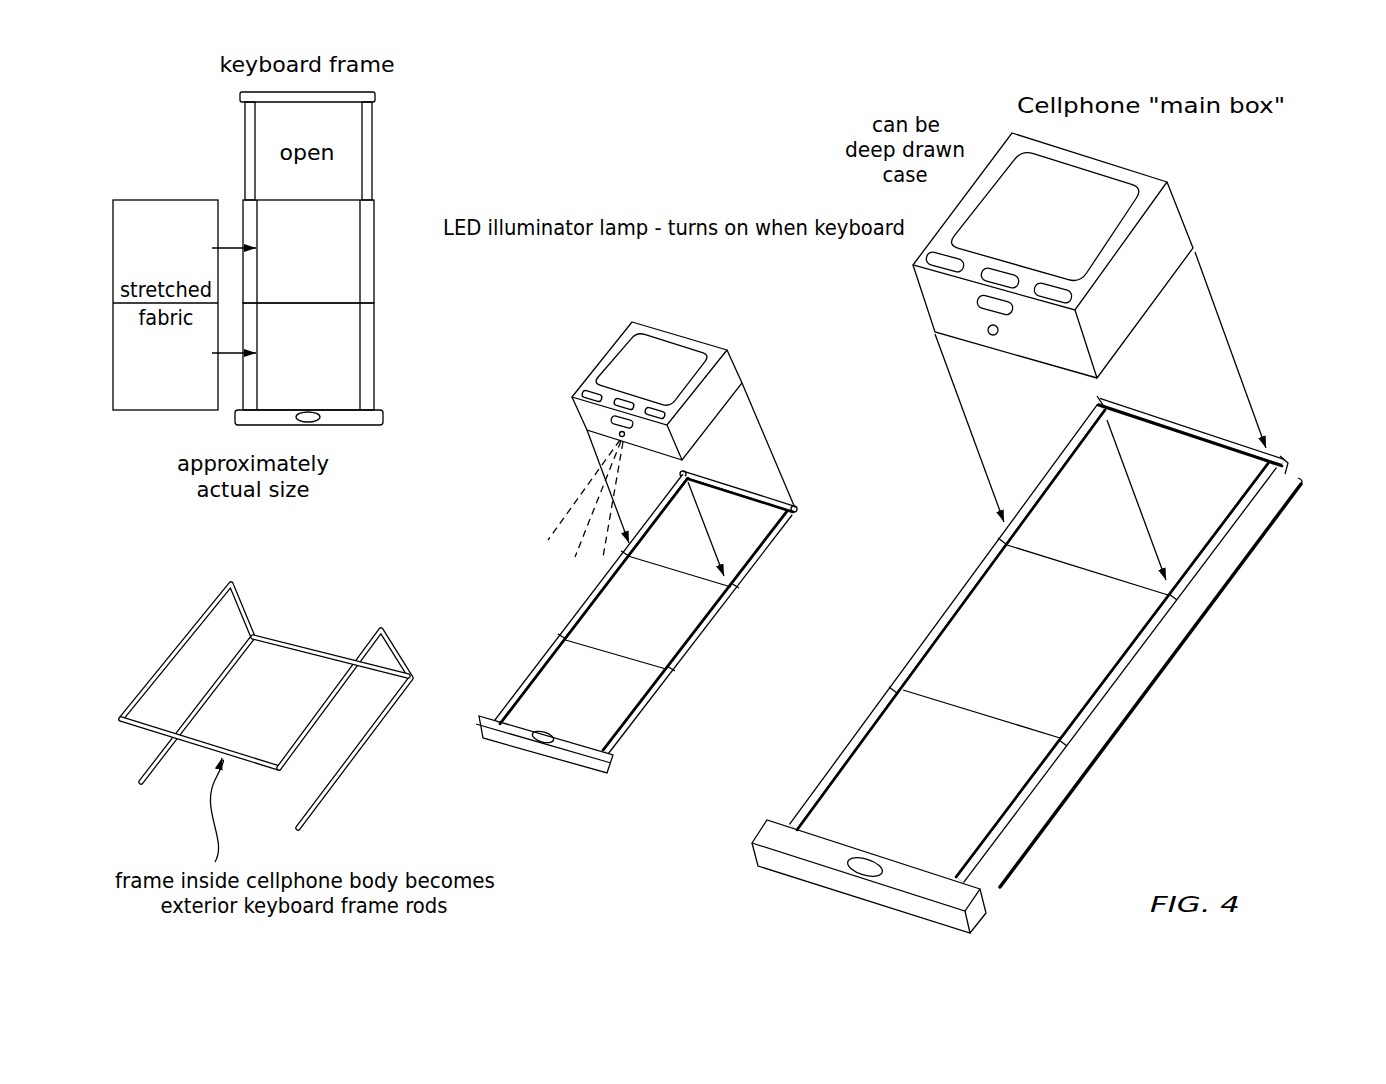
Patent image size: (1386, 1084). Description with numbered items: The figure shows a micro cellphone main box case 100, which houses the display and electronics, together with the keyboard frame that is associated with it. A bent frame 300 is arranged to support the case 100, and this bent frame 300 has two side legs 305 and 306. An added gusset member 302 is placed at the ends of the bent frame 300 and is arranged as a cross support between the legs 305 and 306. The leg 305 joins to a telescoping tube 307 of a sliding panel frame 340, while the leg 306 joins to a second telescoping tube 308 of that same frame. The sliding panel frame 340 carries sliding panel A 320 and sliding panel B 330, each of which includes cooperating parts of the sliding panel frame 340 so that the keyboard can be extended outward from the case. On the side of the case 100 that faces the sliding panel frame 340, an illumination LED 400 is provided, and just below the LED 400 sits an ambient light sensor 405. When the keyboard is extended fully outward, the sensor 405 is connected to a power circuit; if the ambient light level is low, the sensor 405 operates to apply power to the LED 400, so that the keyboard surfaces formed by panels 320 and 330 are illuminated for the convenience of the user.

The main box case 100 is at (1147, 173).
The bent frame 300 is at (218, 736).
The added gusset member 302 is at (280, 637).
The side leg 305 is at (352, 770).
The side leg 306 is at (212, 675).
The telescoping tube 307 is at (372, 160).
The telescoping tube 308 is at (246, 160).
The sliding panel A 320 is at (325, 281).
The sliding panel B 330 is at (325, 386).
The sliding panel frame 340 is at (1152, 685).
The illumination LED 400 is at (980, 307).
The ambient light sensor 405 is at (992, 337).